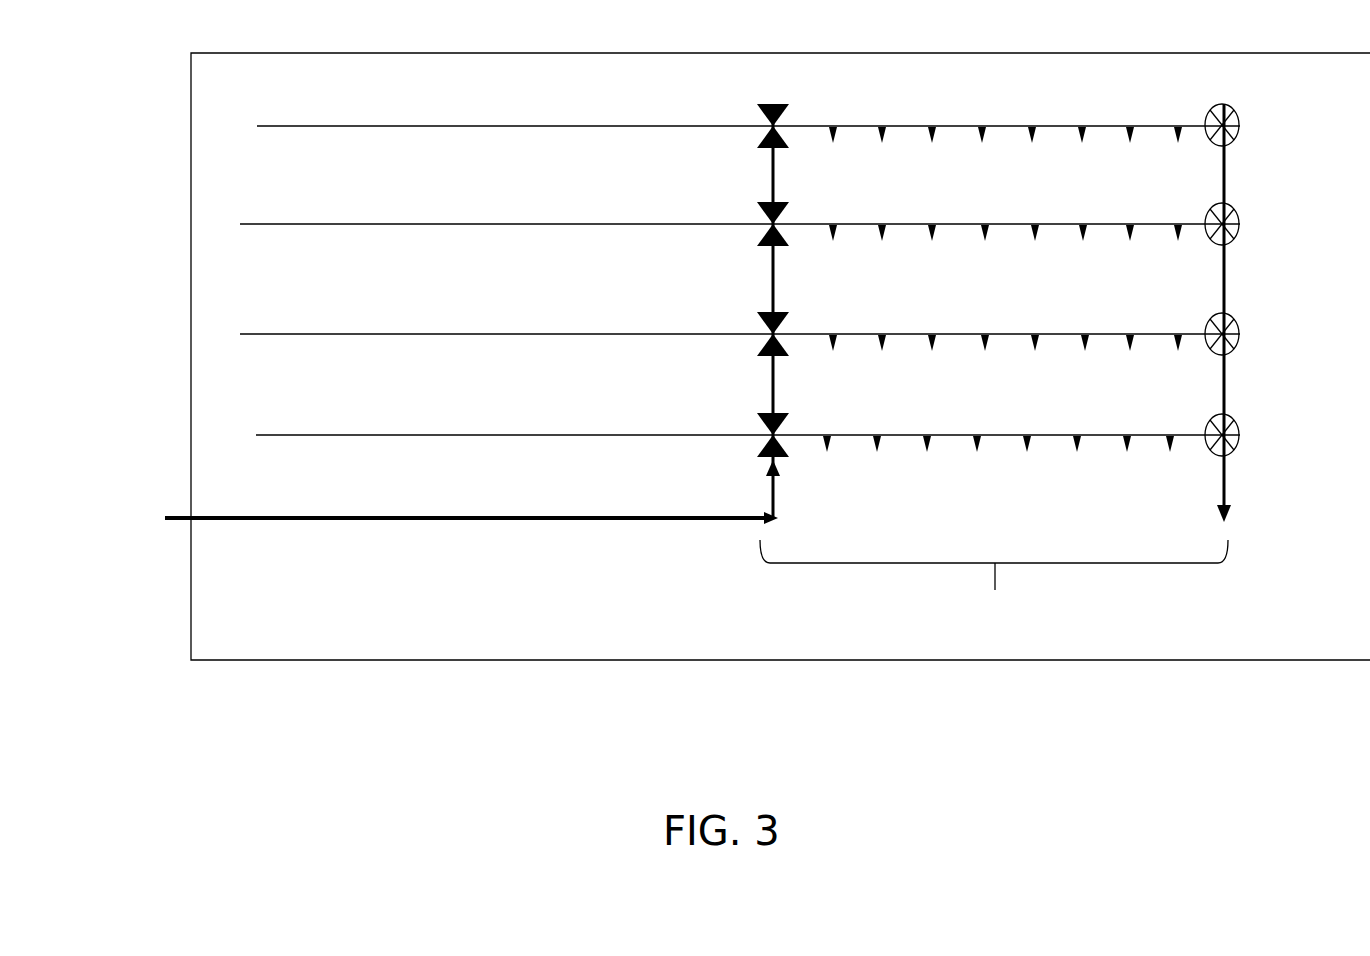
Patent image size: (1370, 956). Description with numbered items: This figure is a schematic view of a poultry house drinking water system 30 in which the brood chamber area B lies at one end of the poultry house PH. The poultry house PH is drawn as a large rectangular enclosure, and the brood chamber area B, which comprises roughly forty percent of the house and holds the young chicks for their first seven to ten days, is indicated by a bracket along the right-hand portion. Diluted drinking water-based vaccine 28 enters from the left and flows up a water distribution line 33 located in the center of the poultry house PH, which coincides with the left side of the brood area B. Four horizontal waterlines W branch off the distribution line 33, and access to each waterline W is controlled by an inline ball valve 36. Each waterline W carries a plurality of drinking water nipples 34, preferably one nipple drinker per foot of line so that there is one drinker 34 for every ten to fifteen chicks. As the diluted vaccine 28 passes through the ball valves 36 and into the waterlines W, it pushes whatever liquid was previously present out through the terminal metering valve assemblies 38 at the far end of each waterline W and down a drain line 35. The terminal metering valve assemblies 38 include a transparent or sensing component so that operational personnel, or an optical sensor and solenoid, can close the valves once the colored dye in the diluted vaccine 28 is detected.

The irrigation system 30 is at (128, 164).
The diluted drinking water-based vaccine 28 is at (449, 520).
The water distribution line 33 is at (768, 260).
The drinking water nipples 34 is at (1130, 127).
The return line 35 is at (1228, 278).
The inline ball valve 36 is at (768, 128).
The terminal metering valve assembly 38 is at (1242, 224).
The waterline W is at (1015, 125).
The brood chamber area B is at (994, 588).
The poultry house PH is at (190, 378).